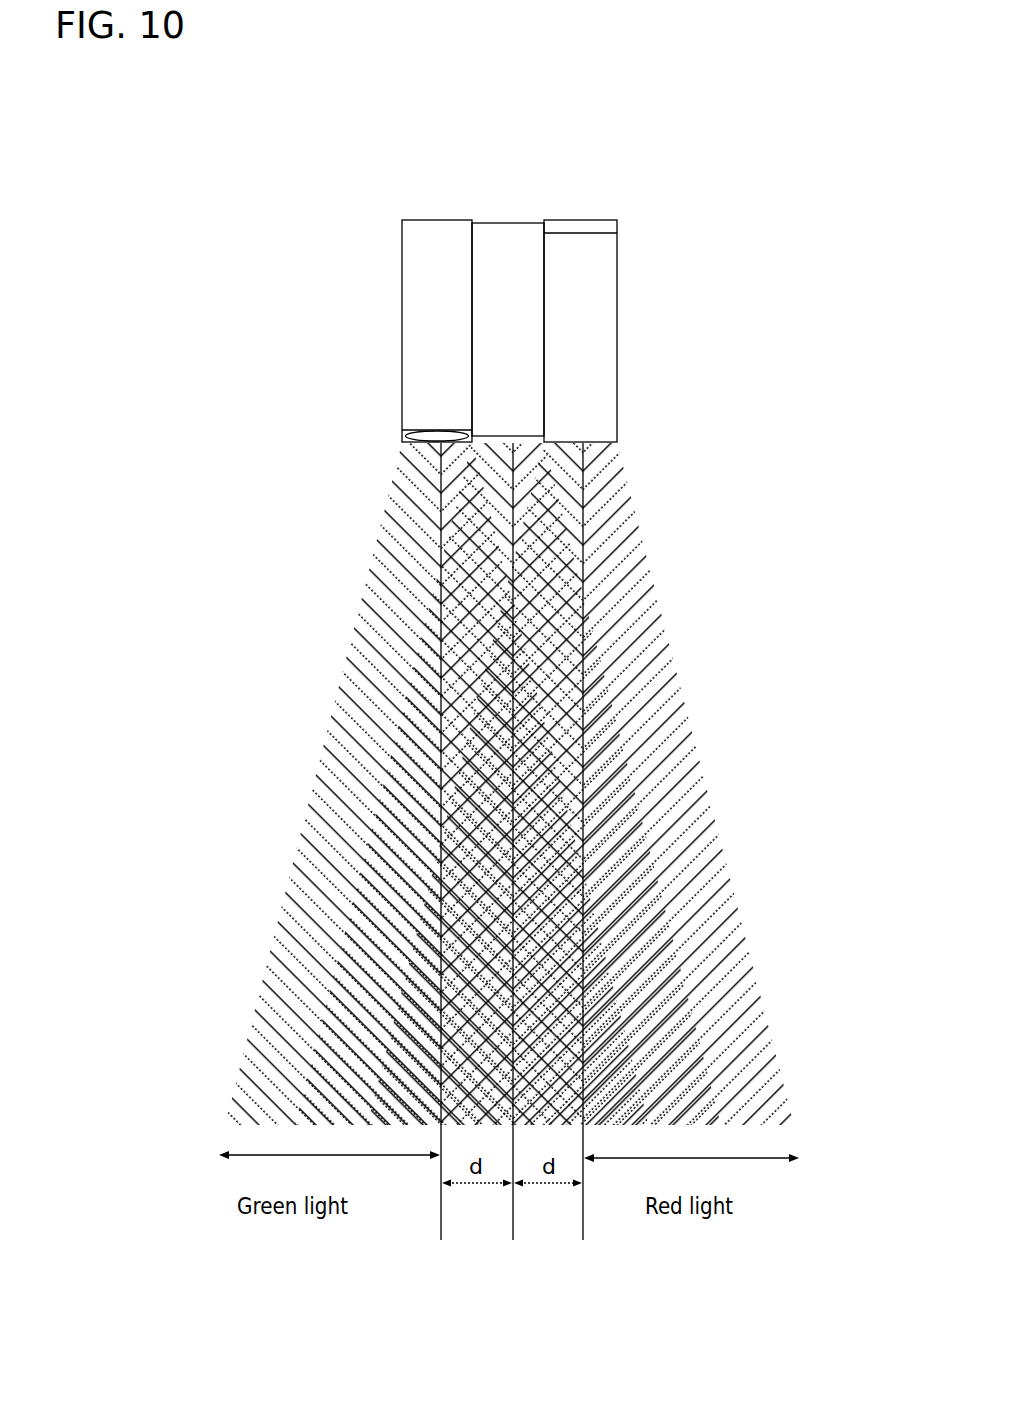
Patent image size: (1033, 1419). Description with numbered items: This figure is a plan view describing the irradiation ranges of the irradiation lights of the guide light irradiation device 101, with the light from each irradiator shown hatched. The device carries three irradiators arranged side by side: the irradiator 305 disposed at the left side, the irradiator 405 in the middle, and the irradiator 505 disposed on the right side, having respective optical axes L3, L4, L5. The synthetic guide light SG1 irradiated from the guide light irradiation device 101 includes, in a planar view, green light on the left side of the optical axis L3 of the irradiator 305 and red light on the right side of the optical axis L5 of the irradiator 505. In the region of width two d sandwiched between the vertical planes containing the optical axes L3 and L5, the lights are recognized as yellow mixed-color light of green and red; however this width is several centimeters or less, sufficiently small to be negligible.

The guide light irradiation device 101 is at (334, 310).
The irradiator 305 is at (428, 219).
The irradiator 405 is at (512, 222).
The irradiator 505 is at (596, 219).
The synthetic guide light SG1 is at (774, 952).
The optical axis L3 is at (436, 873).
The optical axis L4 is at (509, 873).
The optical axis L5 is at (583, 873).